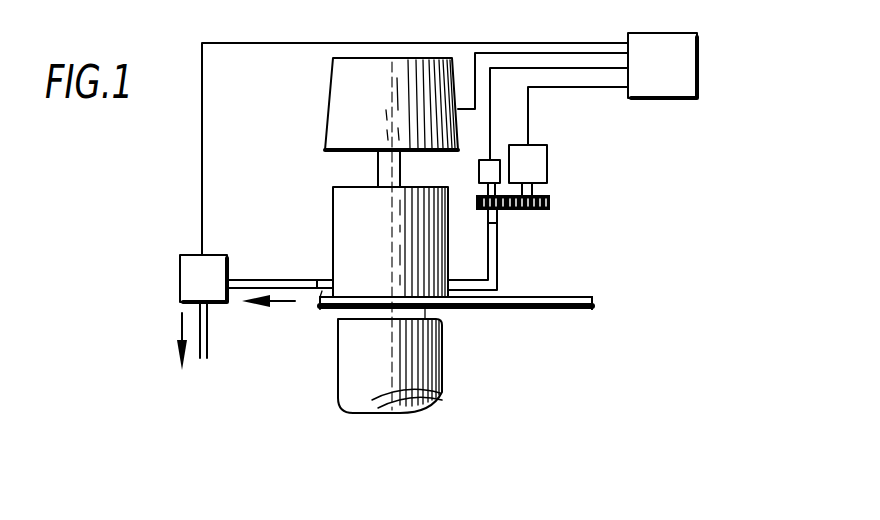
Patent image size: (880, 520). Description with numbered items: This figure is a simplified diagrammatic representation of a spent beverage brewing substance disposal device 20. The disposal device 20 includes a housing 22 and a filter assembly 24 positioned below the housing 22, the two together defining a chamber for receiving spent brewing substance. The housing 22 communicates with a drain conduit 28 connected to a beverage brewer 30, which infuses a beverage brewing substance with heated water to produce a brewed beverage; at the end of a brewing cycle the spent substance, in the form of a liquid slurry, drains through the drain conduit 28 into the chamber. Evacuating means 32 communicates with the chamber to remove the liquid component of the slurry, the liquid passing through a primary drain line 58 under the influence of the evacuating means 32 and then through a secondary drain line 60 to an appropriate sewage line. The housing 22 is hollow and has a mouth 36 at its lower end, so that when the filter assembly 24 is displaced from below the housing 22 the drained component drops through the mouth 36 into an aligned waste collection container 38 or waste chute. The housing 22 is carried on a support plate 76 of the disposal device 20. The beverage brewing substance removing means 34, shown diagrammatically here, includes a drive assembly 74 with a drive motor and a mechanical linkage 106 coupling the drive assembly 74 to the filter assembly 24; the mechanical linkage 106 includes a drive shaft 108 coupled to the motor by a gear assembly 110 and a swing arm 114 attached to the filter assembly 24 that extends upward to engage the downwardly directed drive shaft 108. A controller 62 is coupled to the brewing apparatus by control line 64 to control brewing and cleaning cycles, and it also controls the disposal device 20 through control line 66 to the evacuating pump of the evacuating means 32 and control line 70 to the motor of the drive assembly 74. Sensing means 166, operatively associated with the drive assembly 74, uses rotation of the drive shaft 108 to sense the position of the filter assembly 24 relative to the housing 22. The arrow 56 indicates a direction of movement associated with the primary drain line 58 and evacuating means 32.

The spent beverage brewing substance disposal device 20 is at (286, 197).
The housing 22 is at (342, 228).
The filter assembly 24 is at (456, 309).
The drain conduit 28 is at (378, 168).
The beverage brewer 30 is at (333, 109).
The evacuating means 32 is at (180, 272).
The beverage brewing substance removing means 34 is at (512, 270).
The mouth 36 is at (408, 370).
The waste collection container 38 is at (441, 400).
The direction arrow 56 is at (320, 308).
The primary drain line 58 is at (250, 280).
The secondary drain line 60 is at (207, 336).
The controller 62 is at (692, 36).
The control line 64 is at (588, 53).
The control line 66 is at (505, 43).
The control line 70 is at (612, 87).
The drive assembly 74 is at (615, 168).
The support plate 76 is at (592, 309).
The mechanical linkage 106 is at (522, 238).
The drive shaft 108 is at (497, 212).
The gear assembly 110 is at (568, 198).
The swing arm 114 is at (488, 245).
The sensing means 166 is at (470, 172).